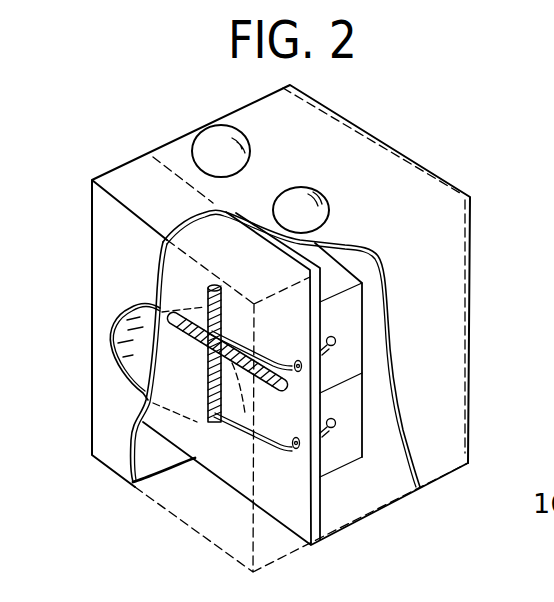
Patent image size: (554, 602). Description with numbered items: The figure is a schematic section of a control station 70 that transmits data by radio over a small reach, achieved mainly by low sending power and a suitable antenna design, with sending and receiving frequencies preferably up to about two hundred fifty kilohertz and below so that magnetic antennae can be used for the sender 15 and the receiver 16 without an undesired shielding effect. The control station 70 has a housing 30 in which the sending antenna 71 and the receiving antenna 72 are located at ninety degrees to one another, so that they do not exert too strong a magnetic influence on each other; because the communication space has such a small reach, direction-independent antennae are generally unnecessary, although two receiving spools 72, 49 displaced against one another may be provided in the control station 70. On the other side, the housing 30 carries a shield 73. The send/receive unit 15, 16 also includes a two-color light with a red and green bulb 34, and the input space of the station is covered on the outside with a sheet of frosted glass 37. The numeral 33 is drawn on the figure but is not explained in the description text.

The control station 70 is at (426, 140).
The top wall 33 is at (307, 141).
The shield 73 is at (470, 422).
The two-color light with red and green bulb 34 is at (217, 140).
The housing 30 is at (91, 437).
The receiver 16 is at (345, 306).
The sender 15 is at (345, 400).
The sheet of frosted glass 37 is at (110, 330).
The sending antenna 71 is at (207, 424).
The receiving antenna 72 is at (258, 378).
The receiving antenna 49 is at (542, 464).